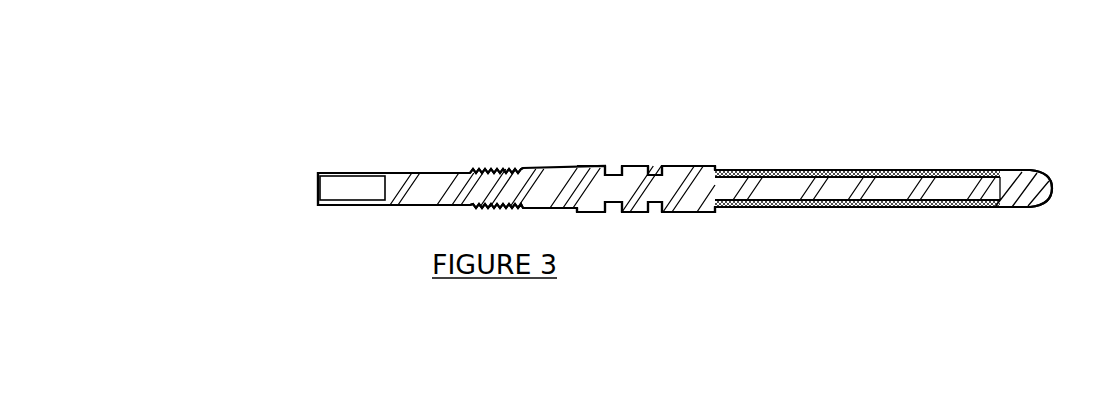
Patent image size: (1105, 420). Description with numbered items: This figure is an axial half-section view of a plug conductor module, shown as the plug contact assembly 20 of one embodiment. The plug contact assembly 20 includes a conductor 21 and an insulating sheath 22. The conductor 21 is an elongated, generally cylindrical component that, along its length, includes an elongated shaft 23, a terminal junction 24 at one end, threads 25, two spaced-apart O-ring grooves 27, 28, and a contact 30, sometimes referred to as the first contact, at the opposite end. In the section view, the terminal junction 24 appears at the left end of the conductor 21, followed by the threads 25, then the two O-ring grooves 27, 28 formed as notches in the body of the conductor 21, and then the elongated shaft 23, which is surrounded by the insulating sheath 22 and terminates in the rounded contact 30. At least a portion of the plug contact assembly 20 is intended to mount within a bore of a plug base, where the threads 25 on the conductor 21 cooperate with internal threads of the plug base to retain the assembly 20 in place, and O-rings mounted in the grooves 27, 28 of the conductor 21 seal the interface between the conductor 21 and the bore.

The plug contact assembly 20 is at (935, 240).
The conductor 21 is at (677, 180).
The insulating sheath 22 is at (810, 170).
The elongated shaft 23 is at (793, 190).
The terminal junction 24 is at (337, 196).
The threads 25 is at (487, 168).
The O-ring groove 27 is at (612, 173).
The O-ring groove 28 is at (652, 173).
The contact 30 is at (1018, 170).